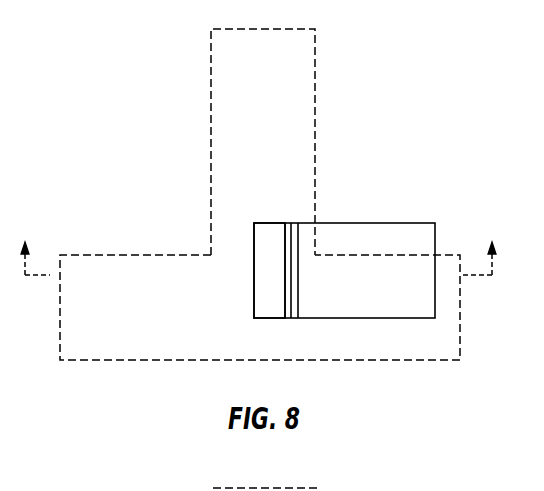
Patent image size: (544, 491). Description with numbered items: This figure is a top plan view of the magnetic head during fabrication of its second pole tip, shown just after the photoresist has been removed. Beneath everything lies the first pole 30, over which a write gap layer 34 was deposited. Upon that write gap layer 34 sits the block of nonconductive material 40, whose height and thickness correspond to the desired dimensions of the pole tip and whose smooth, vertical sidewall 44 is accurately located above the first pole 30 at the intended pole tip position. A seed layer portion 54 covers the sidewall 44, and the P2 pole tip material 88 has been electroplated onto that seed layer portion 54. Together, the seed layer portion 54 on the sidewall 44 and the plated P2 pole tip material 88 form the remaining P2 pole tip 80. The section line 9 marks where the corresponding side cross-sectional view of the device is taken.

The first pole (P1) 30 is at (210, 131).
The write gap layer 34 is at (347, 138).
The block of nonconductive material 40 is at (383, 233).
The sidewall 44 is at (297, 282).
The seed layer portion 54 is at (292, 252).
The P2 pole tip 80 is at (282, 222).
The P2 pole tip material 88 is at (262, 290).
The section line 9— 9 is at (259, 244).